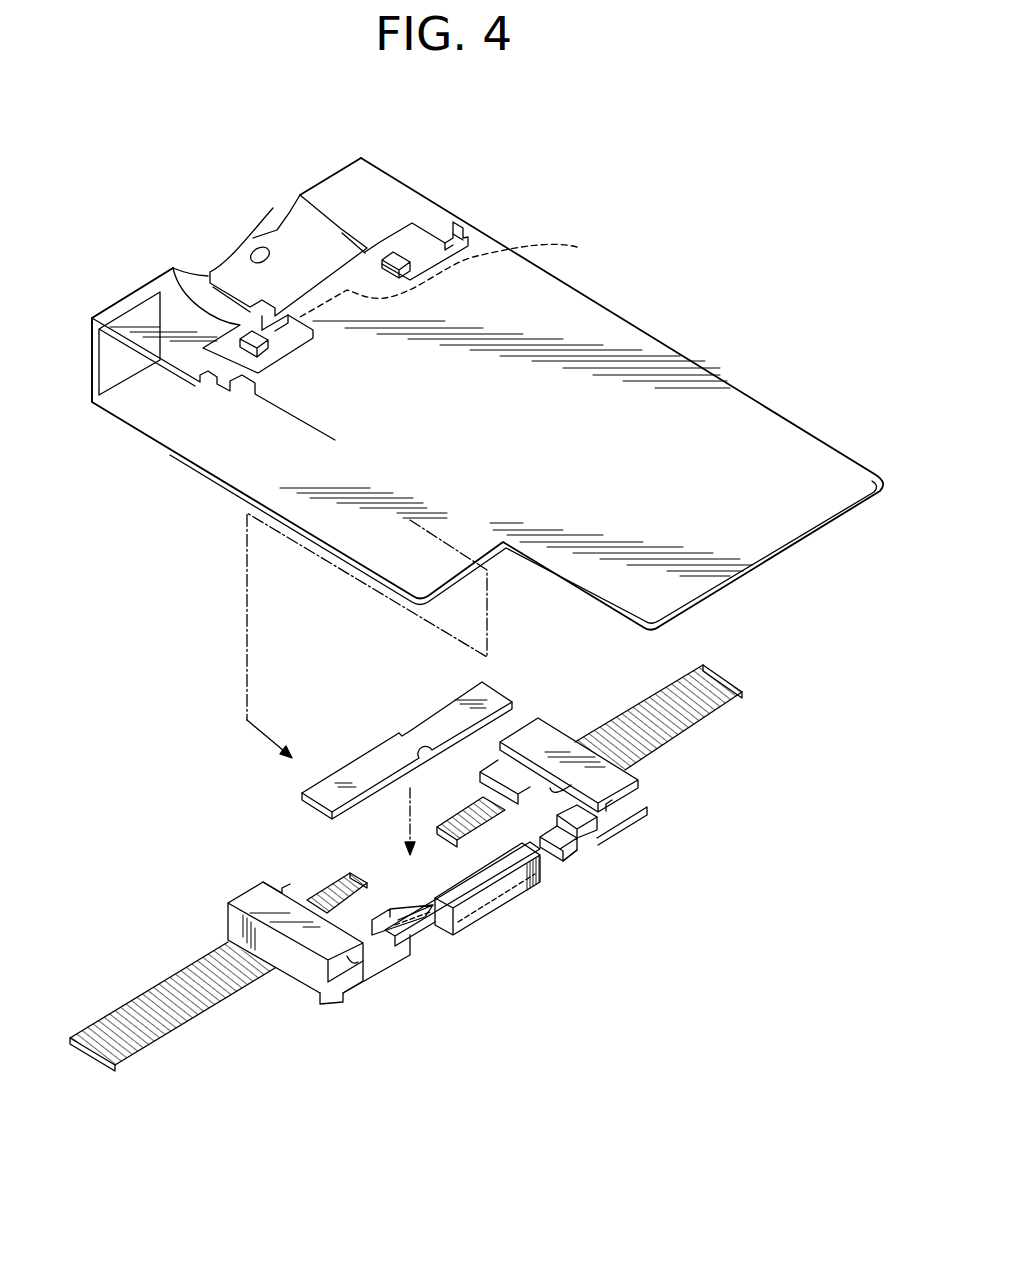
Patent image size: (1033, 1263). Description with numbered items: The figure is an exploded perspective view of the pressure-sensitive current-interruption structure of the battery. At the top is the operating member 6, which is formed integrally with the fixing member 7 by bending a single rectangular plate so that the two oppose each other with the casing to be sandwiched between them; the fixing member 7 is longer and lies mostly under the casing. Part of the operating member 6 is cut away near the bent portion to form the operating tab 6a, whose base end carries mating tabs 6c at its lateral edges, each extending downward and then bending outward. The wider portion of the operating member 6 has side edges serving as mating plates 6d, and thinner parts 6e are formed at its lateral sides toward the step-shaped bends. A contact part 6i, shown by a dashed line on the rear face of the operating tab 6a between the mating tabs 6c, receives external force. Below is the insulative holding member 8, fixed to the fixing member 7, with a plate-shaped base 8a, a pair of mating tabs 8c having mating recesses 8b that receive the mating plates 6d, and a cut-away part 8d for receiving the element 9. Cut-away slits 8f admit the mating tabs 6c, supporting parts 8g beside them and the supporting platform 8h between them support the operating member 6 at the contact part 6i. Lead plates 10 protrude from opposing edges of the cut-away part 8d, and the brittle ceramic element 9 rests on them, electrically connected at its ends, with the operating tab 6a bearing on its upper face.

The operating member 6 is at (596, 334).
The operating tab 6a is at (293, 245).
The mating tab 6c is at (410, 240).
The mating plate 6d is at (433, 197).
The thinner part 6e is at (455, 212).
The contact part 6i is at (452, 272).
The fixing member 7 is at (262, 465).
The holding member 8 is at (588, 867).
The base 8a is at (523, 787).
The mating recess 8b is at (610, 806).
The mating tab 8c is at (563, 753).
The cut-away part 8d is at (388, 868).
The cut-away slit 8f is at (548, 857).
The supporting part 8g is at (563, 832).
The supporting platform 8h is at (490, 877).
The element 9 is at (438, 722).
The lead plate 10 is at (457, 815).